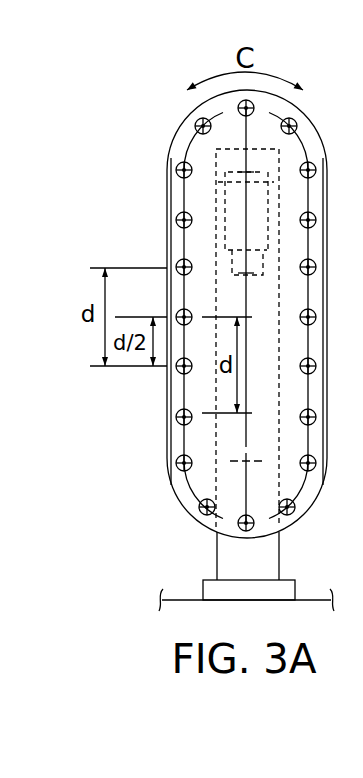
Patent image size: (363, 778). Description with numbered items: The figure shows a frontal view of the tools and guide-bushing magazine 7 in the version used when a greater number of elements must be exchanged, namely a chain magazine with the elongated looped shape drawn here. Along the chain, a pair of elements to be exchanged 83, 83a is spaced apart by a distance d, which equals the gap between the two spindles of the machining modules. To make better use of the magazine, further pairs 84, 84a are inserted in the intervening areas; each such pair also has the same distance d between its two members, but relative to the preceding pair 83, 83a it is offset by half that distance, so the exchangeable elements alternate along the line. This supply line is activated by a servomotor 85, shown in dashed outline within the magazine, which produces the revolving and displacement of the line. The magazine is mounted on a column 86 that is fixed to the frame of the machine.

The tools and guide-bushing magazine 7 is at (142, 122).
The element to be exchanged 83 is at (178, 262).
The element to be exchanged 83a is at (178, 371).
The element to be exchanged of intervening pair 84 is at (178, 312).
The element to be exchanged of intervening pair 84a is at (178, 422).
The servomotor 85 is at (233, 197).
The column 86 is at (237, 555).